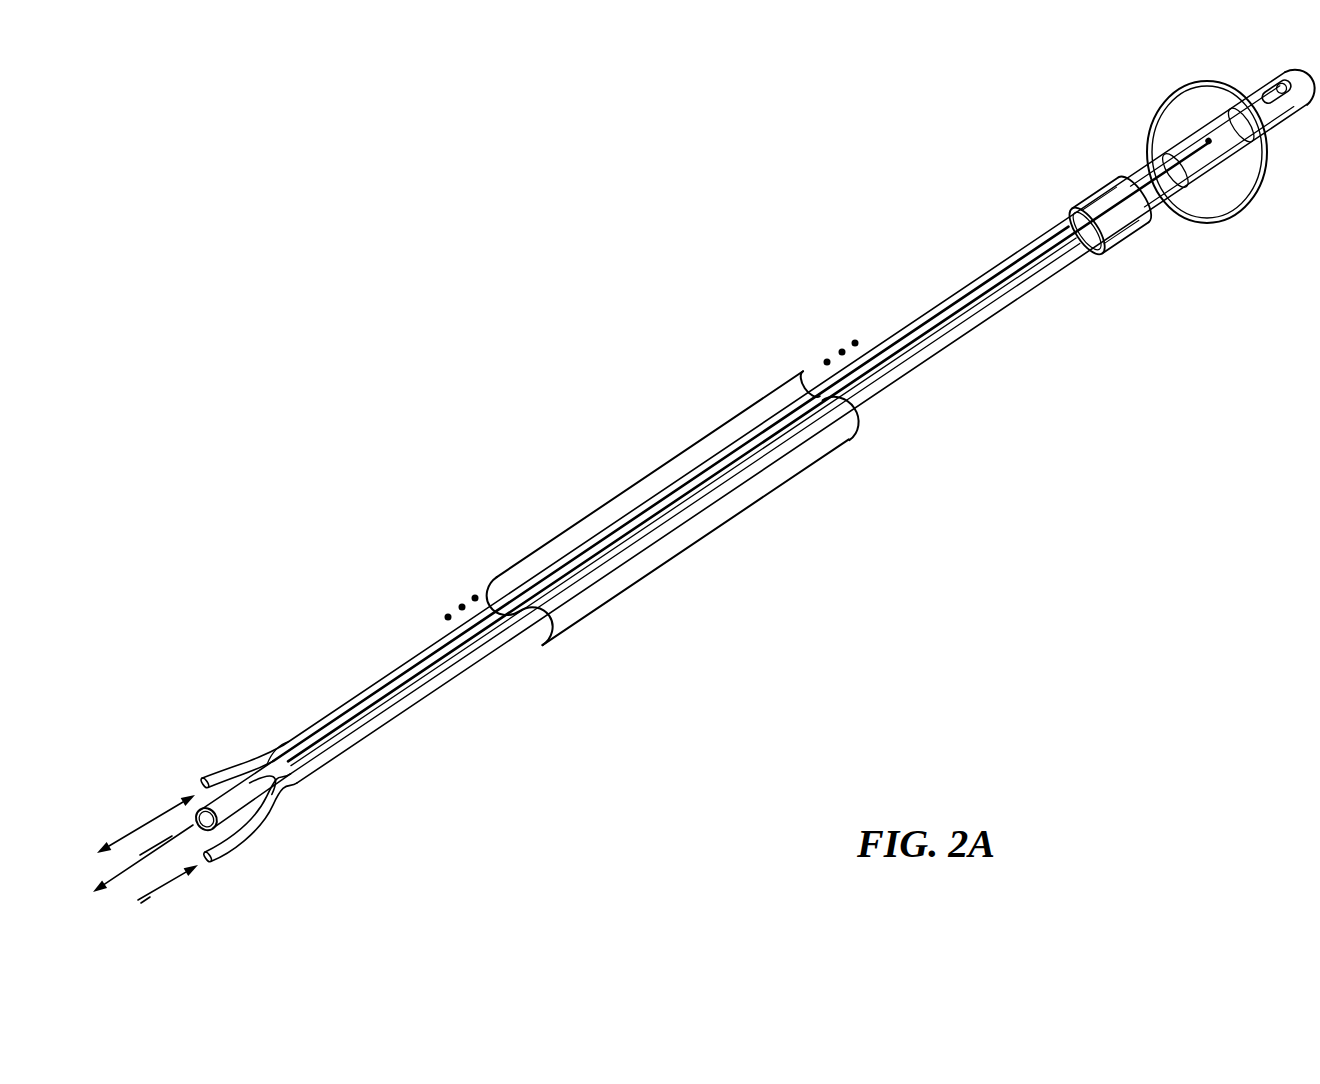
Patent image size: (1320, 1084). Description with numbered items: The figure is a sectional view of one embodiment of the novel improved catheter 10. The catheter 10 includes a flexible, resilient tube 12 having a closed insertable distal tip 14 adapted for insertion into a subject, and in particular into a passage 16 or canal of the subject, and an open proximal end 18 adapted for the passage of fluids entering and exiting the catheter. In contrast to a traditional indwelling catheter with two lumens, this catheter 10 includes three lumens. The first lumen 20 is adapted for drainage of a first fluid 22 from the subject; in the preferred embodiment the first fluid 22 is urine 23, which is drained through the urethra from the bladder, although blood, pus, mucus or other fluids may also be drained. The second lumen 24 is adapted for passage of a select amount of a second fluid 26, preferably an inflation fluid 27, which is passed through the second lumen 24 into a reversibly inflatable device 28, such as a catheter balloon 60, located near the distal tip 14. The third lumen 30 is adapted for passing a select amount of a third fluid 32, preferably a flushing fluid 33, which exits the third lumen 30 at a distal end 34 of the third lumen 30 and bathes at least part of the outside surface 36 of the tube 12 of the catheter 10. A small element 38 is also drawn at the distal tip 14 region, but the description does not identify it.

The catheter 10 is at (992, 218).
The tube 12 is at (653, 543).
The distal tip 14 is at (1313, 80).
The passage 16 is at (745, 512).
The proximal end 18 is at (195, 803).
The first lumen 20 is at (240, 793).
The first fluid 22 is at (123, 877).
The urine 23 is at (143, 862).
The second lumen 24 is at (237, 765).
The second fluid 26 is at (131, 829).
The inflation fluid 27 is at (162, 812).
The reversibly inflatable device 28 is at (1222, 223).
The third lumen 30 is at (240, 835).
The third fluid 32 is at (145, 905).
The flushing fluid 33 is at (147, 897).
The distal end of the third lumen 34 is at (1107, 187).
The outside surface 36 is at (987, 317).
The tip marker 38 is at (1267, 90).
The catheter balloon 60 is at (1255, 200).